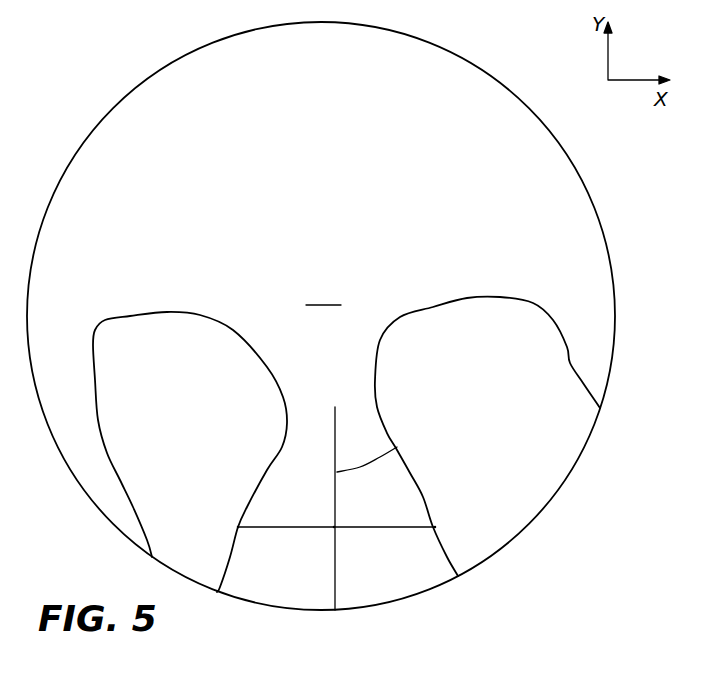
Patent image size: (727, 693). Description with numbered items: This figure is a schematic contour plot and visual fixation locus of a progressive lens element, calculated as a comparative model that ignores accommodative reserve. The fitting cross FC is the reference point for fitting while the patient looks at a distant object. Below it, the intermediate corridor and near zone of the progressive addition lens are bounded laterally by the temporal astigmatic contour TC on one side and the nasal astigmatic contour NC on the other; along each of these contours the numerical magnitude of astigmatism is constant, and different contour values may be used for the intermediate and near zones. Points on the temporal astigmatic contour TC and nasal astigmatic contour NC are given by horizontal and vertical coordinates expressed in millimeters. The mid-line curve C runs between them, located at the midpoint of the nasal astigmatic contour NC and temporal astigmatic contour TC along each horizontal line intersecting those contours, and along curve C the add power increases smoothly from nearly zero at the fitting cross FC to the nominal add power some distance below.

The temporal astigmatic contour TC is at (203, 317).
The fitting cross FC is at (335, 407).
The nasal astigmatic contour NC is at (432, 308).
The mid-line curve C is at (397, 447).